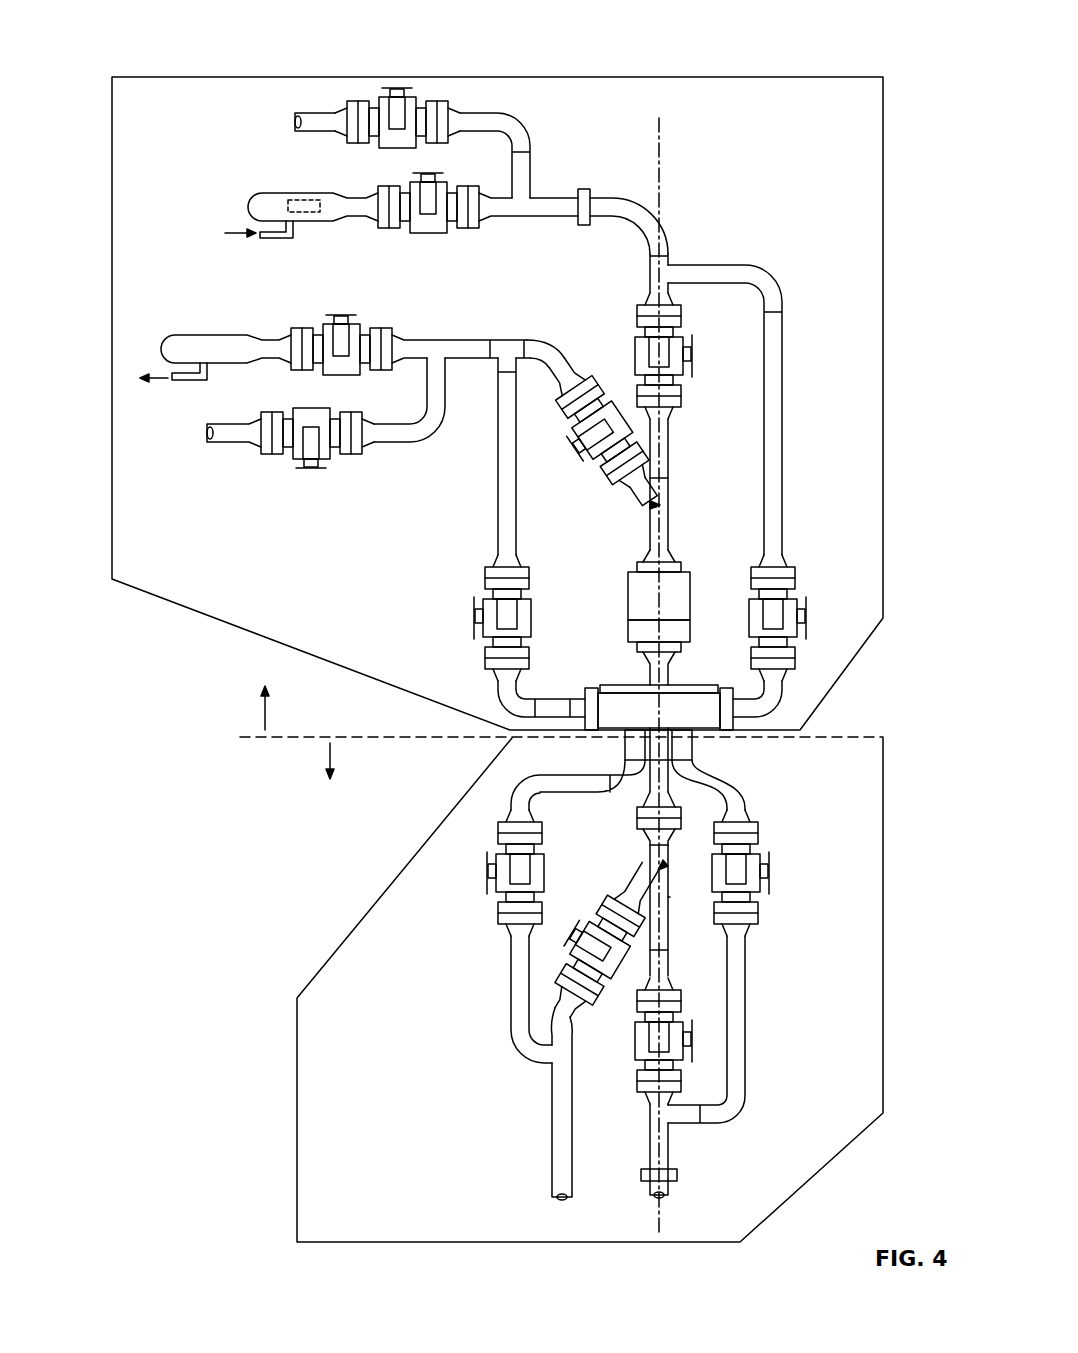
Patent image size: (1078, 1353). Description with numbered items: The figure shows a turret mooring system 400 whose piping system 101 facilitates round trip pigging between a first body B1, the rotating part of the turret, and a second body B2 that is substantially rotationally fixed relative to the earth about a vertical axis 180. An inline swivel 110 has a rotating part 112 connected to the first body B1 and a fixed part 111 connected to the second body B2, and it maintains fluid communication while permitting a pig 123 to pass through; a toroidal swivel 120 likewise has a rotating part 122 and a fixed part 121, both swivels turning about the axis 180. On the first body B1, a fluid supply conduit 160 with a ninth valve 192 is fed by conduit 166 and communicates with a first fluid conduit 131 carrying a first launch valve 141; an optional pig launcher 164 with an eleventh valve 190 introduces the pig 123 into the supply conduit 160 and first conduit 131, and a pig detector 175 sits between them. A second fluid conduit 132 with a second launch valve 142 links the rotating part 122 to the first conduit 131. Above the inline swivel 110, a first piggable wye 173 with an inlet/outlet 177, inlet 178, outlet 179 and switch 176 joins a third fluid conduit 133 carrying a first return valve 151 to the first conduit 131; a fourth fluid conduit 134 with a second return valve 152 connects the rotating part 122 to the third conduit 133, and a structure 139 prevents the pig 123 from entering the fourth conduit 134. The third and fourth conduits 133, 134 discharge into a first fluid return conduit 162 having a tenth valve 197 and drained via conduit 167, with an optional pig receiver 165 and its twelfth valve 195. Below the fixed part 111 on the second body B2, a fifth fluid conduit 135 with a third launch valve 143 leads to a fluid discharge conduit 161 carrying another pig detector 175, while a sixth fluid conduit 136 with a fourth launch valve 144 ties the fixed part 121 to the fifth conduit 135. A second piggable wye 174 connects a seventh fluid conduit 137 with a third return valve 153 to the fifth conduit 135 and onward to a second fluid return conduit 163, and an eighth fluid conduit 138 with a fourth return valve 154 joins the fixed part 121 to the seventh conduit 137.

The turret mooring system 400 is at (126, 38).
The piping system 101 is at (170, 240).
The inline swivel 110 is at (652, 612).
The fixed part 111 is at (628, 632).
The rotating part 112 is at (628, 610).
The toroidal swivel 120 is at (604, 686).
The fixed part 121 is at (626, 738).
The rotating part 122 is at (592, 704).
The pig 123 is at (311, 194).
The first fluid conduit 131 is at (668, 432).
The second fluid conduit 132 is at (784, 312).
The third fluid conduit 133 is at (525, 340).
The fourth fluid conduit 134 is at (496, 480).
The fifth fluid conduit 135 is at (670, 950).
The sixth fluid conduit 136 is at (746, 1032).
The seventh fluid conduit 137 is at (561, 937).
The eighth fluid conduit 138 is at (512, 952).
The structure 139 is at (502, 364).
The first launch valve 141 is at (636, 352).
The second launch valve 142 is at (785, 598).
The third launch valve 143 is at (638, 1056).
The fourth launch valve 144 is at (762, 886).
The first return valve 151 is at (596, 445).
The second return valve 152 is at (484, 622).
The third return valve 153 is at (553, 1012).
The fourth return valve 154 is at (496, 882).
The fluid supply conduit 160 is at (478, 112).
The fluid discharge conduit 161 is at (669, 1187).
The first fluid return conduit 162 is at (432, 432).
The second fluid return conduit 163 is at (551, 1112).
The pig launcher 164 is at (300, 176).
The pig receiver 165 is at (168, 336).
The conduit 166 is at (276, 242).
The conduit 167 is at (188, 385).
The first piggable wye 173 is at (643, 491).
The second piggable wye 174 is at (648, 866).
The pig detector 175 is at (584, 188).
The switch 176 is at (650, 507).
The inlet/outlet 177 is at (672, 545).
The inlet 178 is at (668, 490).
The outlet 179 is at (640, 509).
The vertical axis 180 is at (664, 160).
The eleventh valve 190 is at (465, 186).
The ninth valve 192 is at (405, 92).
The twelfth valve 195 is at (350, 322).
The tenth valve 197 is at (325, 470).
The first body B1 is at (110, 447).
The second body B2 is at (325, 965).